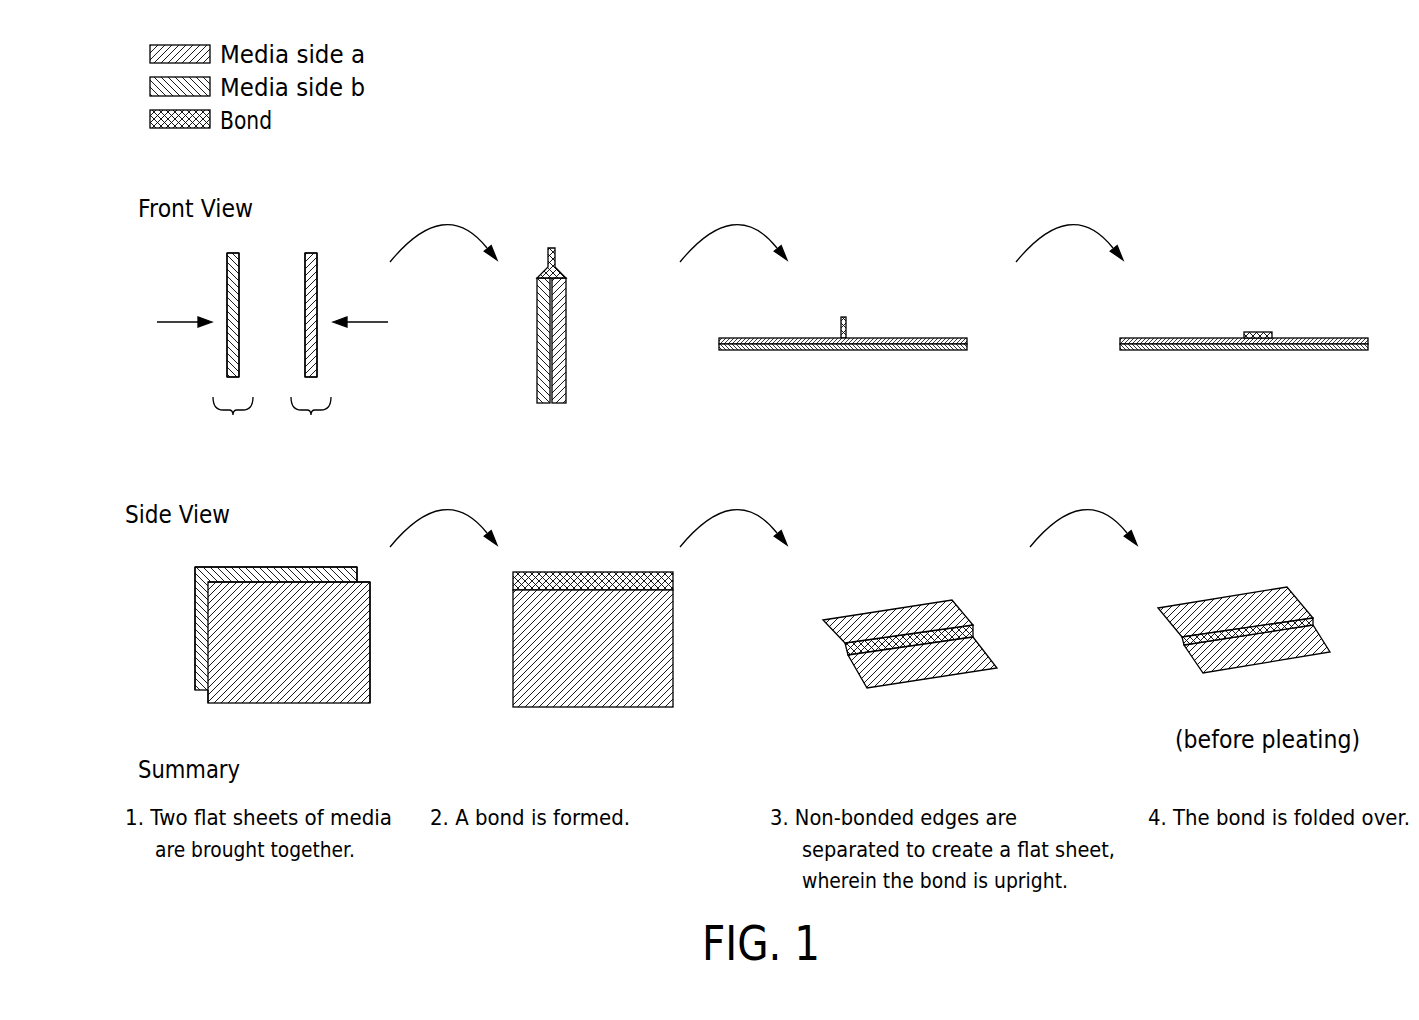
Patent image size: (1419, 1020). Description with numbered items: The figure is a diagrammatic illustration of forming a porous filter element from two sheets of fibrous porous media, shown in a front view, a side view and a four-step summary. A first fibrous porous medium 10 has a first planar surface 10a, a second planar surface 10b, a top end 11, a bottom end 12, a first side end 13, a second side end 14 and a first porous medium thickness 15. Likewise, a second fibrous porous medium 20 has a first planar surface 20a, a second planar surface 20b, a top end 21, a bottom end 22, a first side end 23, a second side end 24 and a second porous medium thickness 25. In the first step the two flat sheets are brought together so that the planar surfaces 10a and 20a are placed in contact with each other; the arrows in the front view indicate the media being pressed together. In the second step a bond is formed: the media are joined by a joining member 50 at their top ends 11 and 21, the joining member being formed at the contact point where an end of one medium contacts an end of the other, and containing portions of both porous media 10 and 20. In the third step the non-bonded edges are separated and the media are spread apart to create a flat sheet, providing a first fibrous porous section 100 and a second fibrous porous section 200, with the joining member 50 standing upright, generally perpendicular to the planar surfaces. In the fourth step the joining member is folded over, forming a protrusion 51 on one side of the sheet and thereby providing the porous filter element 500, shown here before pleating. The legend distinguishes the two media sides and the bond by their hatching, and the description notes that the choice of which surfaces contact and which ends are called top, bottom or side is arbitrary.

The first fibrous porous medium 10 is at (221, 482).
The first planar surface 10a is at (239, 320).
The second planar surface 10b is at (227, 287).
The top end 11 is at (233, 253).
The bottom end 12 is at (231, 377).
The first side end 13 is at (357, 570).
The second side end 14 is at (195, 628).
The first porous medium thickness 15 is at (233, 423).
The second fibrous porous medium 20 is at (299, 482).
The first planar surface 20a is at (305, 340).
The second planar surface 20b is at (317, 277).
The top end 21 is at (310, 253).
The bottom end 22 is at (311, 377).
The first side end 23 is at (370, 622).
The second side end 24 is at (208, 700).
The second porous medium thickness 25 is at (311, 423).
The joining member 50 is at (574, 248).
The protrusion 51 is at (1258, 332).
The first fibrous porous section 100 is at (763, 386).
The second fibrous porous section 200 is at (883, 386).
The porous filter element 500 is at (1218, 386).